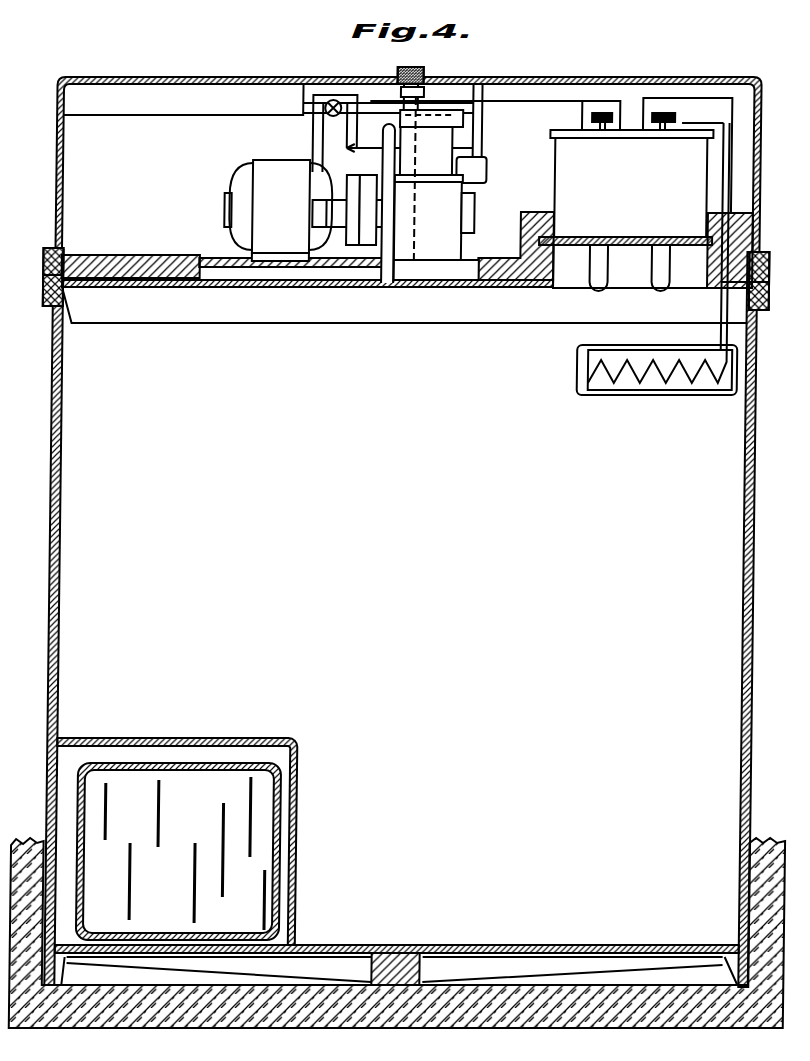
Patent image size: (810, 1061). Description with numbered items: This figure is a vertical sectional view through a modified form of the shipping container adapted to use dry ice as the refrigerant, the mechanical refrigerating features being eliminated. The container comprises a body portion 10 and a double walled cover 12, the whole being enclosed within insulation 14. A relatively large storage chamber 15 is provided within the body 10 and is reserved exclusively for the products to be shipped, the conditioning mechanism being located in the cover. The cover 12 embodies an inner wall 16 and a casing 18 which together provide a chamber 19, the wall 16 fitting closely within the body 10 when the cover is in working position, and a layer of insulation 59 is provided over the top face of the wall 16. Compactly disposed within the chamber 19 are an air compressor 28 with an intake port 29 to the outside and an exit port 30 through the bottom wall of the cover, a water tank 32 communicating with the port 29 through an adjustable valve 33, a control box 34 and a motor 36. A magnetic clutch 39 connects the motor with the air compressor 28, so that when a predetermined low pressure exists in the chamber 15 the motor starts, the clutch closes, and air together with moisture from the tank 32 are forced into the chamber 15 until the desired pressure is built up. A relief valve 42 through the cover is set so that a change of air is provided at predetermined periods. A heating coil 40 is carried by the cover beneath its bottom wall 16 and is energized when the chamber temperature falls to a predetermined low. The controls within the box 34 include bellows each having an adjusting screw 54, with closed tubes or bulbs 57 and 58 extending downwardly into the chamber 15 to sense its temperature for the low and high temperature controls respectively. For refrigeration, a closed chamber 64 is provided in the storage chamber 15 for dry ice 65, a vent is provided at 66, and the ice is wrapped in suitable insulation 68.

The body portion 10 is at (50, 488).
The double walled cover 12 is at (50, 210).
The insulation 14 is at (44, 965).
The storage chamber 15 is at (398, 786).
The inner wall 16 is at (269, 288).
The casing 18 is at (53, 118).
The cover chamber 19 is at (185, 147).
The air compressor 28 is at (437, 182).
The intake port 29 is at (480, 86).
The exit port 30 is at (384, 285).
The water tank 32 is at (127, 95).
The adjustable valve 33 is at (328, 100).
The control box 34 is at (626, 187).
The motor 36 is at (278, 210).
The magnetic clutch 39 is at (359, 247).
The heating coil 40 is at (628, 384).
The relief valve 42 is at (419, 70).
The adjusting screw 54 is at (657, 115).
The closed tube or bulb 57 is at (603, 279).
The closed tube or bulb 58 is at (661, 283).
The layer of insulation 59 is at (104, 257).
The closed chamber 64 is at (118, 755).
The dry ice 65 is at (185, 853).
The vent 66 is at (55, 768).
The insulation 68 is at (250, 763).